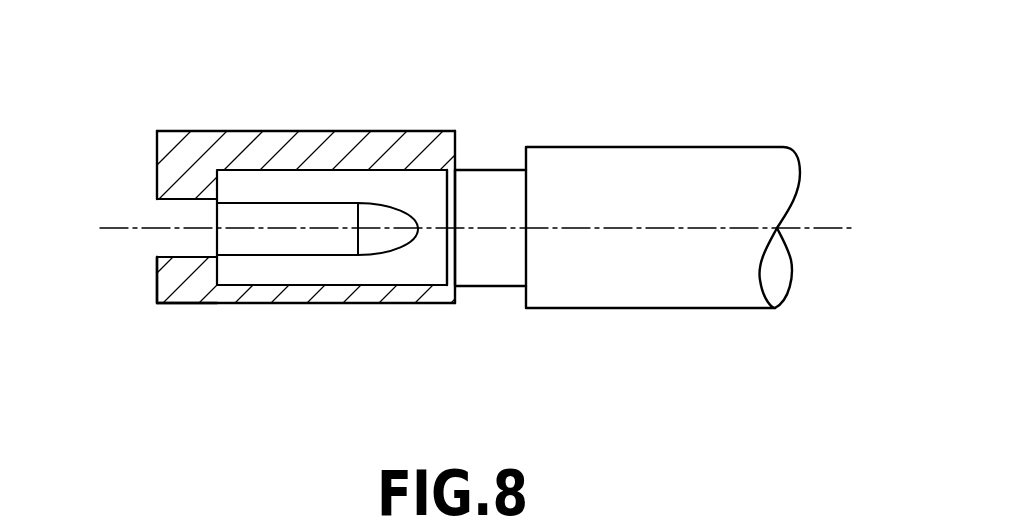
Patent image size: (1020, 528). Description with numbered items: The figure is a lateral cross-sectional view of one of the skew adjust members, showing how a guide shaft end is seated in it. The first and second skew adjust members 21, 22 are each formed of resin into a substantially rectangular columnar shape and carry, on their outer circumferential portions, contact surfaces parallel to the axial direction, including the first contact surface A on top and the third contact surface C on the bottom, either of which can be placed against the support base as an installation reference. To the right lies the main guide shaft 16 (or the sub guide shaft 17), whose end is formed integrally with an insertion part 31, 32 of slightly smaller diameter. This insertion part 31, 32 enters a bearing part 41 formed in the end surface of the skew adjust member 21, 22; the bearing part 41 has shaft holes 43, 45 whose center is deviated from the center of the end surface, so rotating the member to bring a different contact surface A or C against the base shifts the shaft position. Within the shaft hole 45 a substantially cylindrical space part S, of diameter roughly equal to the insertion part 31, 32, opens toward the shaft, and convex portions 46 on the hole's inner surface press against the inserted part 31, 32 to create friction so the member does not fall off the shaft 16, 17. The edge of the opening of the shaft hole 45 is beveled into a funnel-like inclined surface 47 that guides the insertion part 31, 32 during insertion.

The main guide shaft 16 is at (664, 183).
The sub guide shaft 17 is at (722, 170).
The first skew adjust member 21 is at (402, 186).
The second skew adjust member 22 is at (463, 66).
The insertion part 31 is at (534, 169).
The insertion part 32 is at (512, 192).
The bearing part 41 is at (177, 282).
The shaft hole 43 is at (183, 257).
The shaft hole 45 is at (365, 277).
The convex portion 46 is at (397, 240).
The inclined surface 47 is at (452, 285).
The first contact surface A is at (300, 131).
The third contact surface C is at (303, 305).
The space part S is at (401, 195).